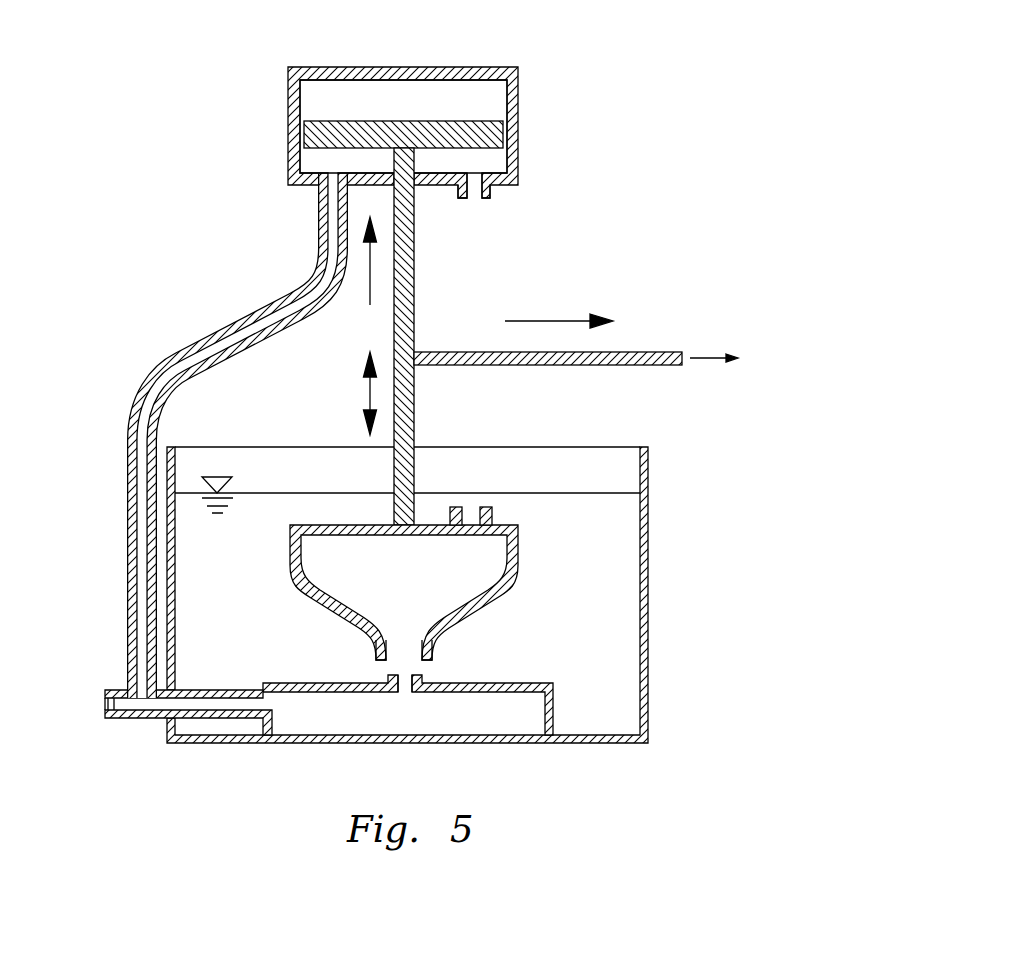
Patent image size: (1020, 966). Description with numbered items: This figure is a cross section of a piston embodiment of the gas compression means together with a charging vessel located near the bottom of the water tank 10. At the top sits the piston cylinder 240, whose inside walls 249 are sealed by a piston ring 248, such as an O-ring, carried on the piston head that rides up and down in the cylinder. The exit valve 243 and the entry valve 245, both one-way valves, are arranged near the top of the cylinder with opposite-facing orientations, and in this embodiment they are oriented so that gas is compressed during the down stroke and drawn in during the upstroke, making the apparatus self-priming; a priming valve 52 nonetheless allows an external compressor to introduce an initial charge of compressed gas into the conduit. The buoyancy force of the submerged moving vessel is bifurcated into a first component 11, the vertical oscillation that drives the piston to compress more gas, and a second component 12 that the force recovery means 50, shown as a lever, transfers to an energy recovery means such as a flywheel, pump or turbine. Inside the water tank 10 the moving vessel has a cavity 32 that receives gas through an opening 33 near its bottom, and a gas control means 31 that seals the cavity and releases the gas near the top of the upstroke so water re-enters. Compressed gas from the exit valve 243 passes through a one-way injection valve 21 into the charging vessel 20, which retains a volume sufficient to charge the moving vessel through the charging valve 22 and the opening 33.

The water tank 10 is at (648, 562).
The first component of the buoyancy force 11 is at (370, 287).
The second component of the buoyancy force 12 is at (548, 320).
The charging vessel 20 is at (553, 710).
The injection valve 21 is at (253, 698).
The charging valve 22 is at (420, 674).
The gas control means 31 is at (478, 506).
The cavity 32 is at (420, 587).
The opening 33 is at (387, 660).
The force recovery means 50 is at (583, 365).
The priming valve 52 is at (105, 699).
The piston cylinder 240 is at (288, 103).
The exit valve 243 is at (318, 198).
The entry valve 245 is at (484, 198).
The piston ring 248 is at (507, 97).
The inside walls 249 is at (300, 93).